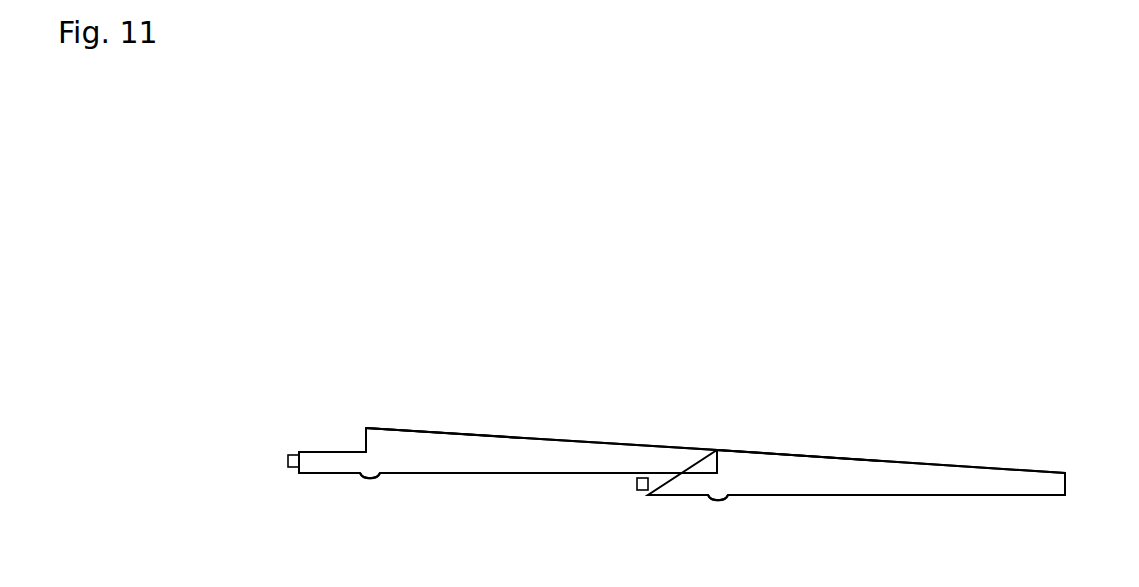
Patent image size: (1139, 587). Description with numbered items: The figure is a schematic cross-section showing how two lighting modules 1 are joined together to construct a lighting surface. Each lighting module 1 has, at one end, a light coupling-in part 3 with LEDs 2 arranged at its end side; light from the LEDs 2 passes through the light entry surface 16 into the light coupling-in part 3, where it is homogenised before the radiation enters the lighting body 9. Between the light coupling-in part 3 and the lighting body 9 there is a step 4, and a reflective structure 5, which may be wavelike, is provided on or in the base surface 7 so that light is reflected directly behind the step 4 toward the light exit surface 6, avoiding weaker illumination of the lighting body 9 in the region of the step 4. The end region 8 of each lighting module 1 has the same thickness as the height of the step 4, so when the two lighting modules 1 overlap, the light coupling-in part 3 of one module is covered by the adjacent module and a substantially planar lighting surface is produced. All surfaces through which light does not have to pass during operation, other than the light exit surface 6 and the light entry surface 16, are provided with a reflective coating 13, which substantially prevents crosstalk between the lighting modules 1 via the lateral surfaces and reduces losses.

The lighting module 1 is at (640, 390).
The LED 2 is at (293, 470).
The light coupling-in part 3 is at (333, 457).
The step 4 is at (350, 412).
The reflective structure 5 is at (363, 474).
The light exit surface 6 is at (568, 441).
The base surface 7 is at (493, 476).
The end region 8 is at (705, 460).
The lighting body 9 is at (440, 440).
The reflective coating 13 is at (1080, 507).
The light entry surface 16 is at (303, 463).